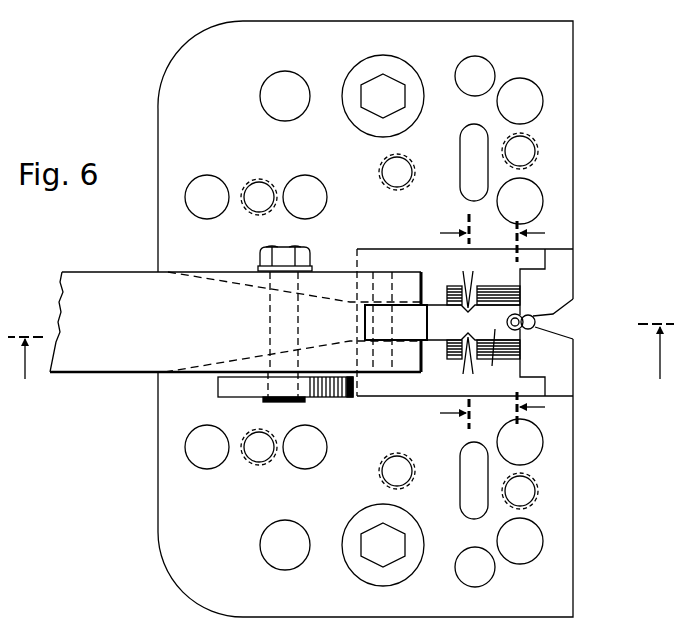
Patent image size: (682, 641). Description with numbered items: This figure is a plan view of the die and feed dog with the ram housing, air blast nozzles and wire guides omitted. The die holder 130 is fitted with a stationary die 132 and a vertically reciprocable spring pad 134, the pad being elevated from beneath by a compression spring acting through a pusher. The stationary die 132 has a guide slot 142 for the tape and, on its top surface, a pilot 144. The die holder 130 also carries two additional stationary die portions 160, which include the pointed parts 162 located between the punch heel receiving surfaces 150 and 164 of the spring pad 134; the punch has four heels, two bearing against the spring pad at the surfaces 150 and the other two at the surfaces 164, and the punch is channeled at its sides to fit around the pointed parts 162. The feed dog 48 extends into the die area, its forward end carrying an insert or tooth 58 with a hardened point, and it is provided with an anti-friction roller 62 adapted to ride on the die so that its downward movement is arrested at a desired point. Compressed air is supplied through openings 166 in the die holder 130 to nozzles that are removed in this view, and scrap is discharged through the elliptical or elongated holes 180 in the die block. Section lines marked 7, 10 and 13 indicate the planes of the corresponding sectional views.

The section line 7- 7 is at (341, 371).
The section line 10- 10 is at (444, 321).
The section line 13- 13 is at (540, 324).
The feed dog 48 is at (112, 357).
The insert or tooth 58 is at (418, 323).
The anti-friction roller 62 is at (218, 388).
The die holder 130 is at (558, 523).
The stationary die 132 is at (562, 301).
The spring pad 134 is at (493, 357).
The guide slot 142 is at (556, 326).
The pilot 144 is at (519, 318).
The punch heel receiving surface 150 is at (492, 288).
The stationary die portions 160 is at (370, 250).
The pointed parts 162 is at (468, 290).
The punch heel receiving surface 164 is at (455, 284).
The openings 166 is at (473, 65).
The holes 180 is at (477, 152).